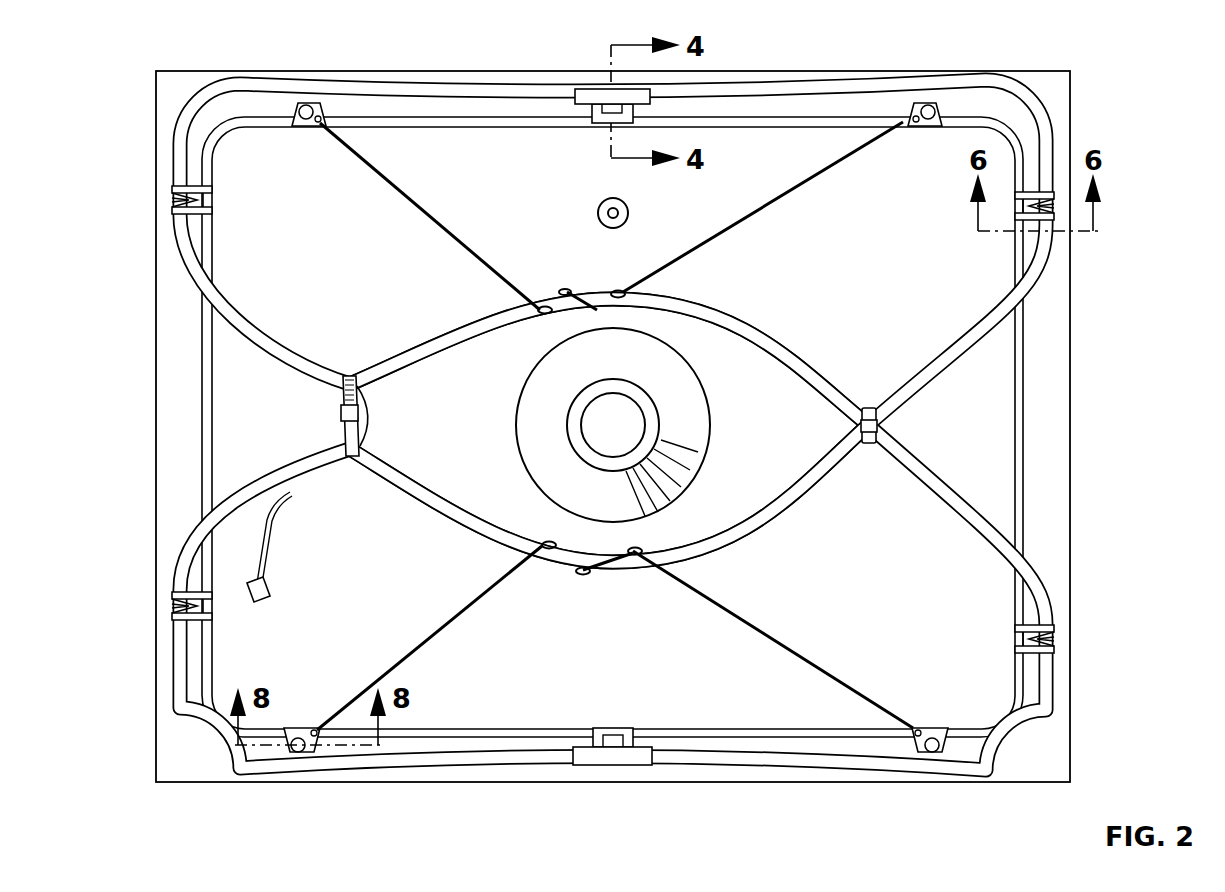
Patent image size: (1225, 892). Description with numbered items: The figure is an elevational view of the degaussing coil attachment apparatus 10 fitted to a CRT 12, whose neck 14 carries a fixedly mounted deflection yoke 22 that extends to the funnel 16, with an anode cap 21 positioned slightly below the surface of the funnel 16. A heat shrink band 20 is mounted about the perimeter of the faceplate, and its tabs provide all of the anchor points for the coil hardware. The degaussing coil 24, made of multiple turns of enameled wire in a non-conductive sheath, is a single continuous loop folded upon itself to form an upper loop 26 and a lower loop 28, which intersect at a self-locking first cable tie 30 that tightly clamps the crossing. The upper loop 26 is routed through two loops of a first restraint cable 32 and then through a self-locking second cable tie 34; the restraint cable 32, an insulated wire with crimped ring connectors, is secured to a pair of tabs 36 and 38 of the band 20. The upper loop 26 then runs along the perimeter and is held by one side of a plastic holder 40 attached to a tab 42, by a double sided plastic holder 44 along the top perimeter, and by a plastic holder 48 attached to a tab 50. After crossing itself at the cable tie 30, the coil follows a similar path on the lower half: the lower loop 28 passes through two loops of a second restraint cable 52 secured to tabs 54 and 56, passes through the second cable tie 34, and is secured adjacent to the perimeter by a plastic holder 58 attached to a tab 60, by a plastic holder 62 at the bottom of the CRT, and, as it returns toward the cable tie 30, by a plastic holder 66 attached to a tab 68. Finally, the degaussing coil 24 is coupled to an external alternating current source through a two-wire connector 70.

The degaussing coil attachment apparatus 10 is at (479, 840).
The CRT 12 is at (126, 497).
The neck 14 is at (647, 405).
The funnel 16 is at (881, 610).
The heat shrink band 20 is at (1024, 466).
The anode cap 21 is at (627, 204).
The deflection yoke 22 is at (702, 448).
The degaussing coil 24 is at (737, 93).
The upper loop 26 is at (744, 321).
The lower loop 28 is at (735, 527).
The first cable tie 30 is at (872, 445).
The first restraint cable 32 is at (800, 190).
The second cable tie 34 is at (372, 398).
The tab 36 is at (320, 106).
The tab 38 is at (925, 100).
The plastic holder 40 is at (172, 201).
The tab 42 is at (213, 206).
The double sided plastic holder 44 is at (651, 95).
The plastic holder 48 is at (1052, 194).
The tab 50 is at (1013, 236).
The second restraint cable 52 is at (740, 616).
The tab 54 is at (932, 760).
The tab 56 is at (312, 758).
The plastic holder 58 is at (172, 604).
The tab 60 is at (212, 610).
The plastic holder 62 is at (641, 766).
The plastic holder 66 is at (1057, 641).
The tab 68 is at (1020, 642).
The two-wire connector 70 is at (276, 589).